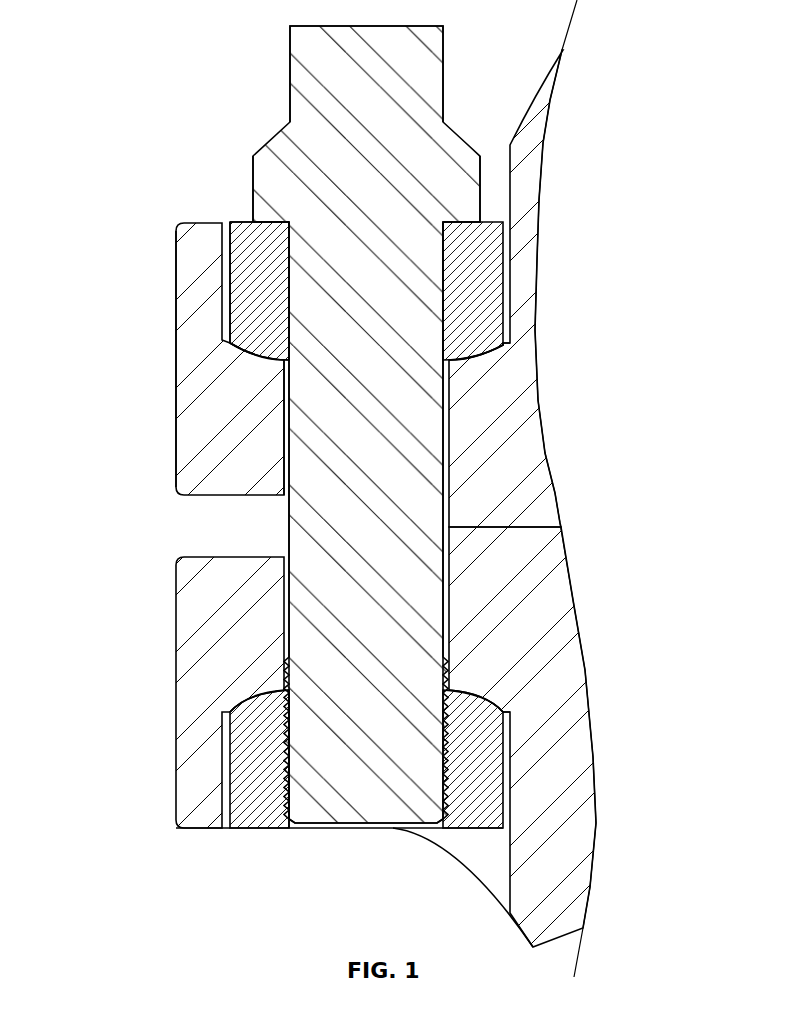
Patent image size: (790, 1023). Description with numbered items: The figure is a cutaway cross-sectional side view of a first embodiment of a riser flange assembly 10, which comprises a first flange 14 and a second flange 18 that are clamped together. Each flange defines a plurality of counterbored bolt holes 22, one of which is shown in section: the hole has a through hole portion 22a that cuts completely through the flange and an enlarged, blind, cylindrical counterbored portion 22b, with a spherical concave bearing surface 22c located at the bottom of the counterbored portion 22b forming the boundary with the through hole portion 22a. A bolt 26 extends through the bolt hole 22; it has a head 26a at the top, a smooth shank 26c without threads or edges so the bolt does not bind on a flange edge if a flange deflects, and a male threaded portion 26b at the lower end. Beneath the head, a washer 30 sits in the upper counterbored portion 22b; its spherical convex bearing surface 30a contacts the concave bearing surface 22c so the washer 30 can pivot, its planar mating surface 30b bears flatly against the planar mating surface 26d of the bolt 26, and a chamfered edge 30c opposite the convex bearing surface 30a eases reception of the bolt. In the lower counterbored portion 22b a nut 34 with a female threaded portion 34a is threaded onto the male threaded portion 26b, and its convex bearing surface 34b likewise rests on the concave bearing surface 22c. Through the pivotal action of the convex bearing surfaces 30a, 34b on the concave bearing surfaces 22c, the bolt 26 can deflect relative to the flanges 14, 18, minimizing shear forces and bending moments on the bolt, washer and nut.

The riser flange assembly 10 is at (165, 75).
The first flange 14 is at (543, 99).
The second flange 18 is at (565, 872).
The counterbored bolt hole 22 is at (278, 467).
The through hole portion 22a is at (283, 450).
The counterbored portion 22b is at (221, 260).
The concave bearing surface 22c is at (502, 353).
The bolt 26 is at (433, 455).
The head 26a is at (460, 135).
The male threaded portion 26b is at (447, 781).
The shank 26c is at (445, 565).
The planar mating surface 26d is at (468, 220).
The washer 30 is at (480, 283).
The convex bearing surface 30a is at (240, 348).
The planar mating surface 30b is at (245, 221).
The chamfered edge 30c is at (282, 221).
The nut 34 is at (233, 778).
The female threaded portion 34a is at (283, 738).
The convex bearing surface 34b is at (240, 706).